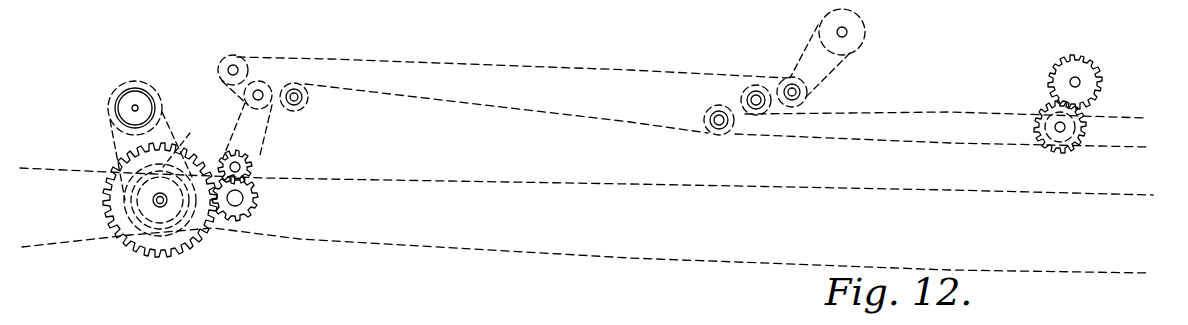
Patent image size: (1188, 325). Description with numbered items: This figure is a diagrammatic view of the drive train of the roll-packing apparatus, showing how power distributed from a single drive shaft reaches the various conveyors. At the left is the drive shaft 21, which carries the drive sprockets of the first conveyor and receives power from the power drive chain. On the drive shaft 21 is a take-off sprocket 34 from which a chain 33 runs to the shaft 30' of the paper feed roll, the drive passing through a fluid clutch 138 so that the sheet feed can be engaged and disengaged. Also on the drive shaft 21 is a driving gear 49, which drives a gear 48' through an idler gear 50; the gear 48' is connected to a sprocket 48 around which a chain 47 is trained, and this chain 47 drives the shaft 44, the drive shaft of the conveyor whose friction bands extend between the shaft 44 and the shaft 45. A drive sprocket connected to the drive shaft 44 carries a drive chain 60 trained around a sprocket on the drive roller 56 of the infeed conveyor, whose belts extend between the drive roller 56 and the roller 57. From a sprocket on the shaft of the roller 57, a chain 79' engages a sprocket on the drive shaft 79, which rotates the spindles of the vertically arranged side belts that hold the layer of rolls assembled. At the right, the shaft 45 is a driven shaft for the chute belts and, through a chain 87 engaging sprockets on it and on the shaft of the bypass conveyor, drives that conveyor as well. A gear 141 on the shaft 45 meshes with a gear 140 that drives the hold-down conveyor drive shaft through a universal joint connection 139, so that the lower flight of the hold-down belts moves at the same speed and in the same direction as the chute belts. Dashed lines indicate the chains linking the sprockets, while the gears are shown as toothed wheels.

The drive shaft 21 is at (153, 200).
The shaft 30' is at (135, 90).
The chain 33 is at (173, 120).
The take-off sprocket 34 is at (177, 145).
The drive shaft 44 is at (258, 90).
The shaft 45 is at (1065, 128).
The chain 47 is at (265, 132).
The sprocket 48 is at (266, 160).
The gear 48' is at (277, 142).
The driving gear 49 is at (160, 250).
The idler gear 50 is at (248, 205).
The drive roller 56 is at (233, 57).
The roller 57 is at (803, 100).
The drive chain 60 is at (447, 60).
The drive shaft 79 is at (867, 32).
The chain 79' is at (855, 61).
The chain 87 is at (1152, 107).
The fluid clutch 138 is at (115, 108).
The universal joint connection 139 is at (1093, 43).
The gear 140 is at (1092, 72).
The gear 141 is at (1055, 153).